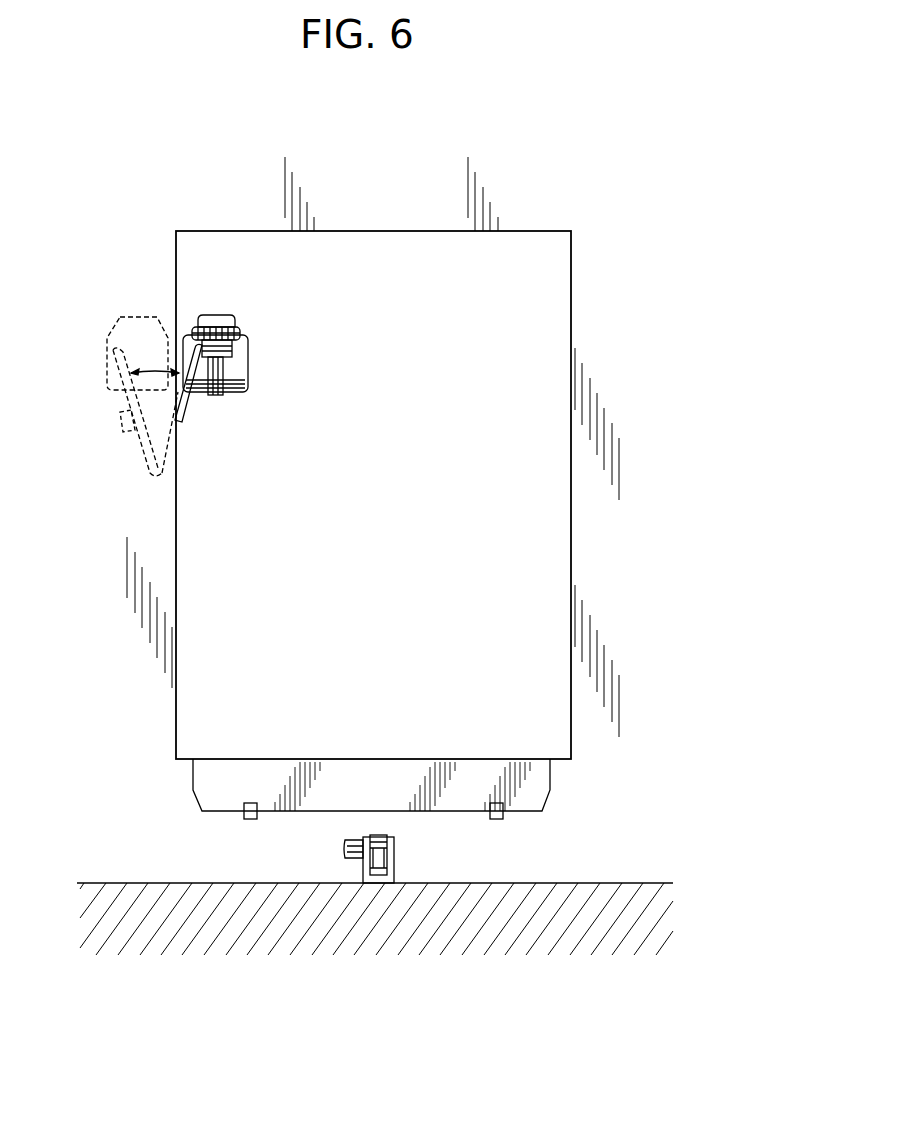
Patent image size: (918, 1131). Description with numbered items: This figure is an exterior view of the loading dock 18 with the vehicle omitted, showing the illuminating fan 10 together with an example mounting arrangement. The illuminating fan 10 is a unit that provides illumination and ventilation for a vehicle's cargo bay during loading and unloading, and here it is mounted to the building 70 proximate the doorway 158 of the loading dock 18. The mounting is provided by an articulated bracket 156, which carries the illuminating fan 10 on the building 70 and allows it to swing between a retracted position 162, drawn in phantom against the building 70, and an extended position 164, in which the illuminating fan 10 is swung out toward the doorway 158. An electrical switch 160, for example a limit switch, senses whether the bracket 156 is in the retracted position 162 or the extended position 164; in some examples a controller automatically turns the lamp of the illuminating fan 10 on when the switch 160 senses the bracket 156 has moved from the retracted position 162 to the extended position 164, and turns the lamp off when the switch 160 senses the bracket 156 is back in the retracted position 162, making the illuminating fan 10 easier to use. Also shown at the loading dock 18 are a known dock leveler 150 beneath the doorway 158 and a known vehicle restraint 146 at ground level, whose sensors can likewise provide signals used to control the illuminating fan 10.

The illuminating fan 10 is at (135, 315).
The loading dock 18 is at (164, 850).
The building 70 is at (150, 534).
The vehicle restraint 146 is at (396, 850).
The dock leveler 150 is at (552, 782).
The articulated bracket 156 is at (185, 403).
The doorway 158 is at (403, 499).
The electrical switch 160 is at (118, 421).
The retracted position 162 is at (145, 448).
The extended position 164 is at (167, 452).